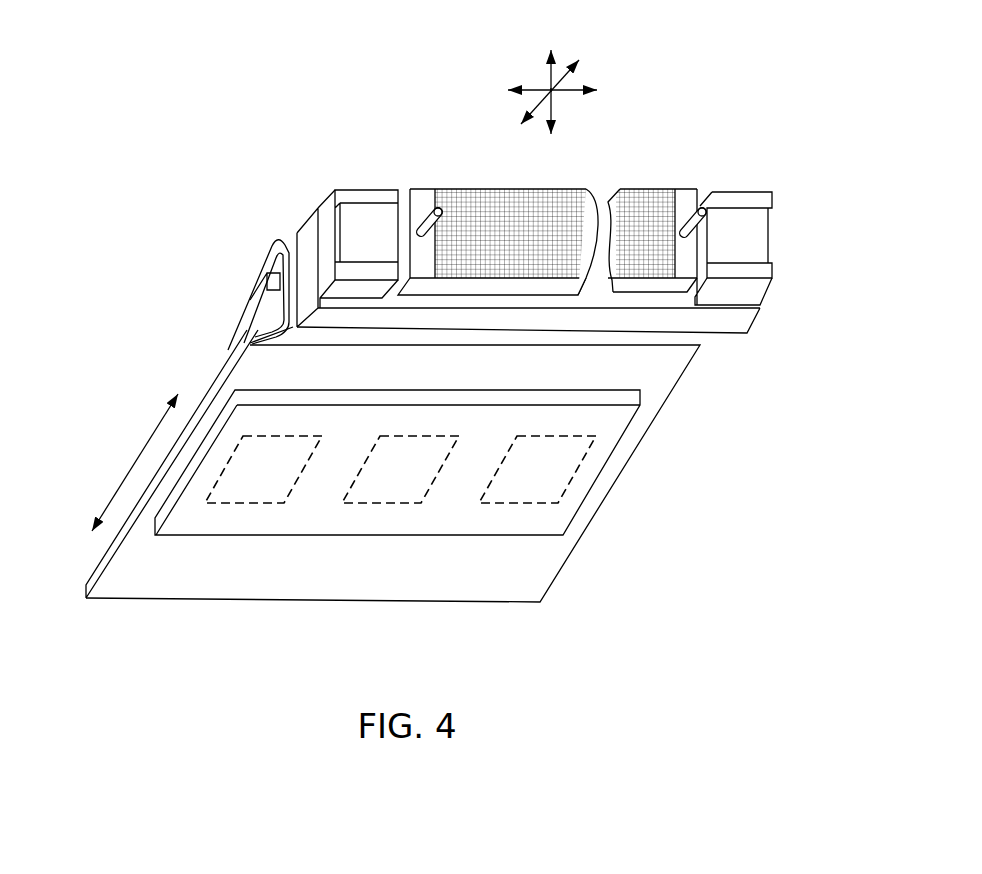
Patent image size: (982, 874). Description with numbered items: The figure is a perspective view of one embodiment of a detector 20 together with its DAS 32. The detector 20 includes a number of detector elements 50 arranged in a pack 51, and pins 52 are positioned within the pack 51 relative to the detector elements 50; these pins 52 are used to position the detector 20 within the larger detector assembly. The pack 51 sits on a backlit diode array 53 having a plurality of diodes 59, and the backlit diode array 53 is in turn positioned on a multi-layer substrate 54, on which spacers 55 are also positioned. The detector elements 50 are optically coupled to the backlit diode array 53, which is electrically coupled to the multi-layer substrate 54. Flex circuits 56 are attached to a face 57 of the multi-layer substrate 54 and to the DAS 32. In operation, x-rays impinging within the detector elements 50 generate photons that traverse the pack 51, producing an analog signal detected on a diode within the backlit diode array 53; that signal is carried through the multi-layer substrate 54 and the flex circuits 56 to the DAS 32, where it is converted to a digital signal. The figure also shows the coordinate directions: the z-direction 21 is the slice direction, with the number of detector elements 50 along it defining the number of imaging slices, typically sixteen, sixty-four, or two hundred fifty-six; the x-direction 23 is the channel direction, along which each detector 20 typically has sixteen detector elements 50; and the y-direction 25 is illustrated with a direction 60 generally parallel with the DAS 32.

The detector 20 is at (707, 155).
The z-direction 21 is at (580, 83).
The x-direction 23 is at (552, 108).
The y-direction 25 is at (581, 66).
The DAS 32 is at (618, 462).
The detector element 50 is at (512, 200).
The pack 51 is at (435, 156).
The pin 52 is at (428, 212).
The backlit diode array 53 is at (672, 302).
The multi-layer substrate 54 is at (745, 320).
The spacer 55 is at (370, 187).
The flex circuit 56 is at (262, 268).
The face 57 is at (292, 236).
The diode 59 is at (600, 197).
The direction 60 is at (131, 463).